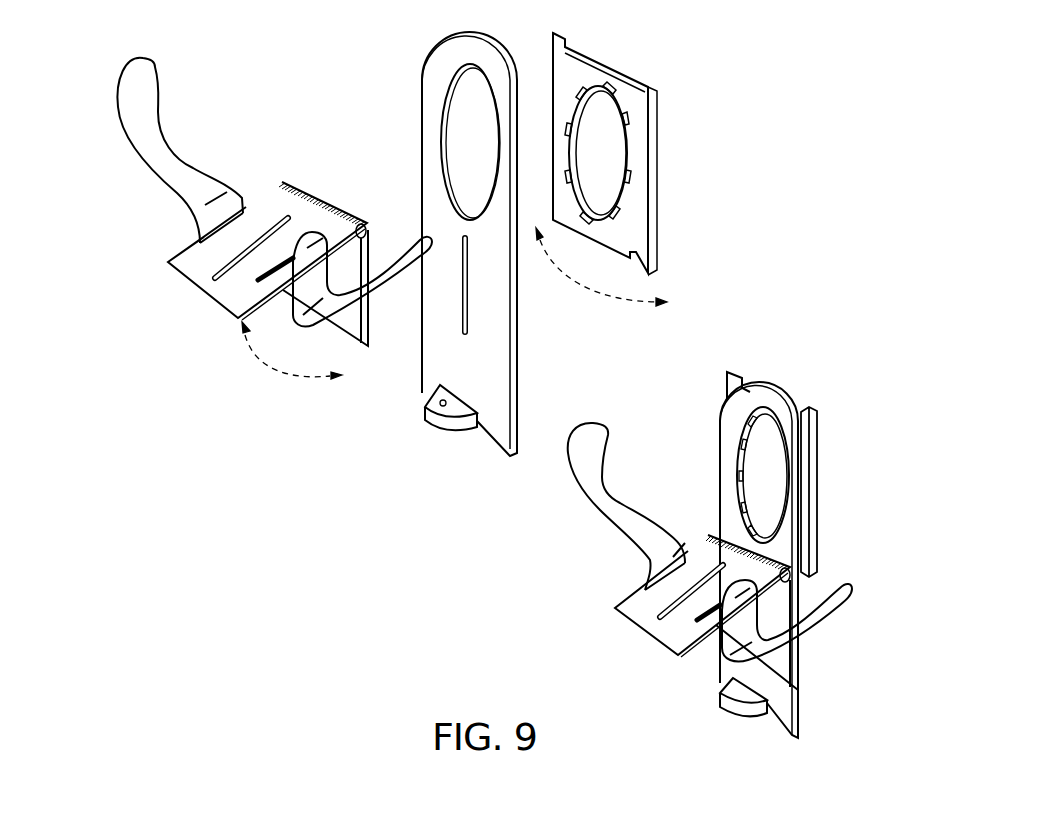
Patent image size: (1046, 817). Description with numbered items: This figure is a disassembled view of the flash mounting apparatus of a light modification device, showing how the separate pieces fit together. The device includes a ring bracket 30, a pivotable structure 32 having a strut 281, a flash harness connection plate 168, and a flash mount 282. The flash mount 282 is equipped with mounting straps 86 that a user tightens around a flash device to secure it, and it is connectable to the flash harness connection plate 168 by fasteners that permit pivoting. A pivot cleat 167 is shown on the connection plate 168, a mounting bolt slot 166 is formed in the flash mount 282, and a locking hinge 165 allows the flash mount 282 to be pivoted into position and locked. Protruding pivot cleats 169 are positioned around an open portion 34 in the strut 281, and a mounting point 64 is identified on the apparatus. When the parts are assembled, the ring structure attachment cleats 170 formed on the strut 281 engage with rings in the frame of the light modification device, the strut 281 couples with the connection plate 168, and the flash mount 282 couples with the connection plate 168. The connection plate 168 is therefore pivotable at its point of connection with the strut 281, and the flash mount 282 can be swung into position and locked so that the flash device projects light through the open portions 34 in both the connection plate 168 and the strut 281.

The ring bracket 30 is at (795, 220).
The pivotable structure 32 is at (672, 123).
The open portion 34 is at (463, 138).
The mounting point 64 is at (424, 402).
The mounting straps 86 is at (172, 197).
The locking hinge 165 is at (307, 180).
The mounting bolt slot 166 is at (226, 262).
The pivot cleat 167 is at (480, 285).
The flash harness connection plate 168 is at (490, 448).
The protruding pivot cleats 169 is at (638, 165).
The ring structure attachment cleats 170 is at (657, 74).
The strut 281 is at (636, 200).
The flash mount 282 is at (650, 612).